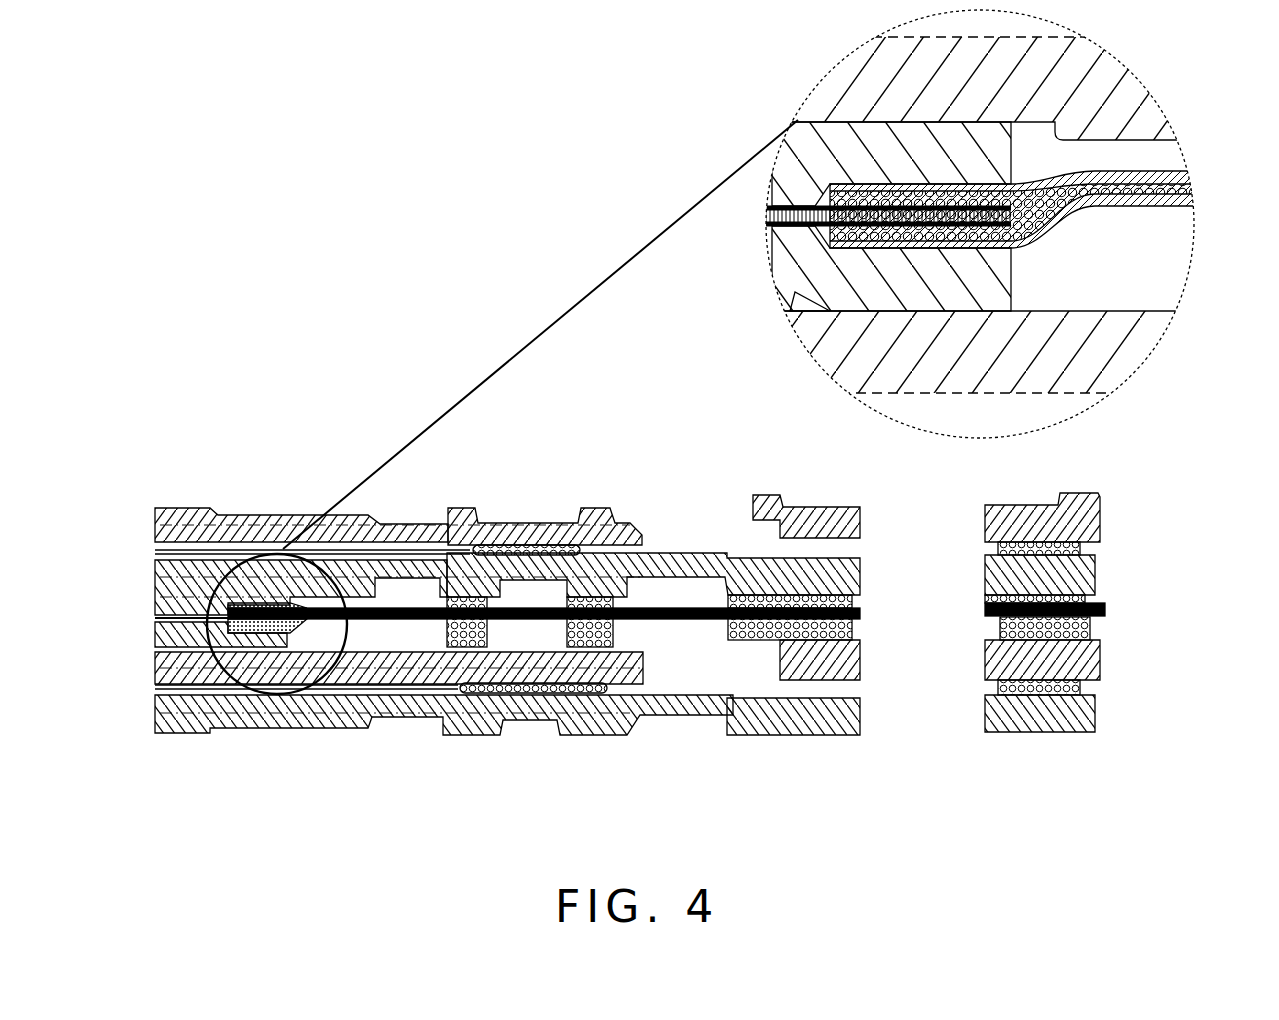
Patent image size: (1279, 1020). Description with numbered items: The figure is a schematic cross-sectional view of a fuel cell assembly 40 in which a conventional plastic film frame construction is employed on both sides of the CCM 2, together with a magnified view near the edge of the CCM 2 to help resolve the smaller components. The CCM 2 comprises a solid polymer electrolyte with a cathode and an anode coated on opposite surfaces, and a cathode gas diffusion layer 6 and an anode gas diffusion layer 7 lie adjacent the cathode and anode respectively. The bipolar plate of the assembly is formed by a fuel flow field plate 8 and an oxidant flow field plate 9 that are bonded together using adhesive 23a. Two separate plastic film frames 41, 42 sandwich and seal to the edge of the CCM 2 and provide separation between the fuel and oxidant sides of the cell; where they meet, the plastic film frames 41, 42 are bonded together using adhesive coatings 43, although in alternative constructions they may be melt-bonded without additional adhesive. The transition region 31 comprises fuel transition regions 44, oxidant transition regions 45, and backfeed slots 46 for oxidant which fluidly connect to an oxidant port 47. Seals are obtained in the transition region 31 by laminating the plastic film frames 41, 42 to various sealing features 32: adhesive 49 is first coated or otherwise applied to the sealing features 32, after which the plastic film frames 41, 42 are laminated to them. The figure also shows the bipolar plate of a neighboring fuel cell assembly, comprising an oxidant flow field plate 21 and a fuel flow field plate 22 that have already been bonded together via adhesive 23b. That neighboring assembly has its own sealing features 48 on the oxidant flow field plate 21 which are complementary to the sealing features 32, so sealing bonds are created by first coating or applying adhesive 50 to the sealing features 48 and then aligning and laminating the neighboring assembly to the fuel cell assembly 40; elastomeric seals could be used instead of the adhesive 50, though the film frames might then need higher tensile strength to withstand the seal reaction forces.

The CCM 2 is at (138, 626).
The cathode gas diffusion layer 6 is at (167, 637).
The anode gas diffusion layer 7 is at (167, 610).
The fuel flow field plate 8 is at (167, 573).
The oxidant flow field plate 9 is at (175, 528).
The oxidant flow field plate 21 is at (160, 673).
The fuel flow field plate 22 is at (240, 720).
The adhesive 23a is at (565, 543).
The adhesive 23b is at (548, 690).
The transition region 31 is at (596, 755).
The sealing features 32 is at (457, 590).
The fuel cell assembly 40 is at (226, 330).
The plastic film frame 41 is at (857, 613).
The plastic film frame 42 is at (860, 607).
The adhesive coatings 43 is at (1088, 206).
The fuel transition regions 44 is at (407, 592).
The oxidant transition regions 45 is at (405, 650).
The backfeed slots 46 is at (737, 538).
The oxidant port 47 is at (900, 712).
The sealing features 48 is at (460, 657).
The adhesive 49 is at (477, 598).
The adhesive 50 is at (487, 627).